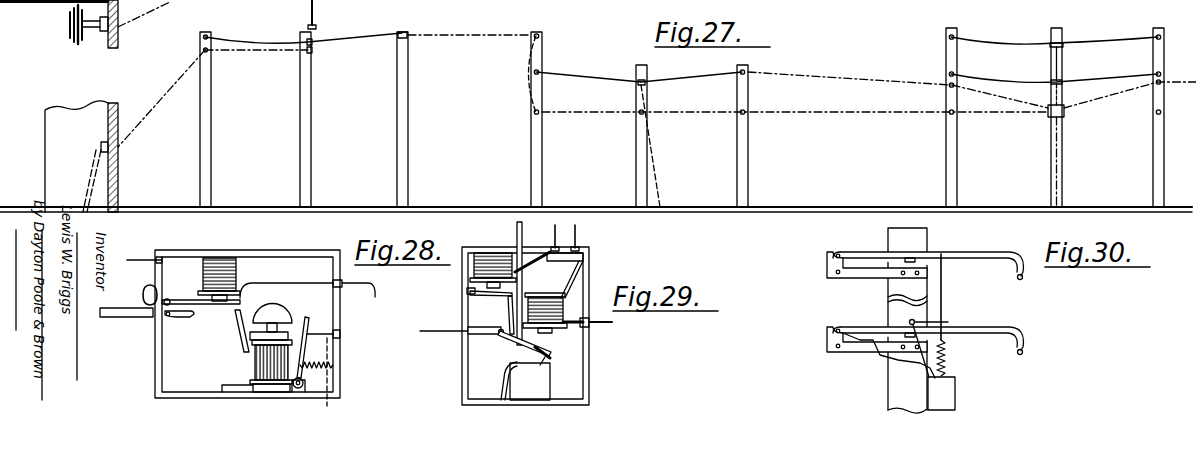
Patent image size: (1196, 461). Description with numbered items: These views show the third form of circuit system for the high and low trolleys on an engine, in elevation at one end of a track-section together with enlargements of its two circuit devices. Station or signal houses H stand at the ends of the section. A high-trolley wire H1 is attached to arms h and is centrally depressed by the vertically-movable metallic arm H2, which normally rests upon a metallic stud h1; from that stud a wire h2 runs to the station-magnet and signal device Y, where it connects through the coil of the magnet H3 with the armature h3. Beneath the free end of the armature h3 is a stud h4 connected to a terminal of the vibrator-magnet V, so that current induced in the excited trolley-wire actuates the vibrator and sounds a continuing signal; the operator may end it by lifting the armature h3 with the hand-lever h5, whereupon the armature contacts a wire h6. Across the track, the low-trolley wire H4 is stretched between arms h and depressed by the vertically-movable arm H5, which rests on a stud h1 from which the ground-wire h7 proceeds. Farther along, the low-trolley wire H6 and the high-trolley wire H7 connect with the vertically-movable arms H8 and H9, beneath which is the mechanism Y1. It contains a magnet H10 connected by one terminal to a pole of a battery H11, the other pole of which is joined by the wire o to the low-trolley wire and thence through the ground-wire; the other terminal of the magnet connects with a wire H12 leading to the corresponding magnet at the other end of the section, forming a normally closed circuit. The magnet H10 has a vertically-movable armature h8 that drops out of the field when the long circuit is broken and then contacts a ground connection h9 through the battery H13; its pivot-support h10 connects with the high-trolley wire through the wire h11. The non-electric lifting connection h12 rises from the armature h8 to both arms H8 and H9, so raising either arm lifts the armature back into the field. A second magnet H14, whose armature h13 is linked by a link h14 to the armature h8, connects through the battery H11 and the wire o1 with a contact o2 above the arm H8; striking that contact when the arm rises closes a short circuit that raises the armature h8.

In FIG. 27, the station or signal house H is at (67, 24).
In FIG. 27, the high-trolley wire H1 is at (303, 32).
In FIG. 27, the vertically-movable metallic arm H2 is at (315, 40).
In FIG. 28, the magnet H3 is at (229, 279).
In FIG. 27, the low-trolley wire H4 is at (588, 67).
In FIG. 27, the vertically-movable arm H5 is at (644, 80).
In FIG. 27, the low-trolley wire H6 is at (1054, 69).
In FIG. 30, the low-trolley wire H6 is at (1022, 353).
In FIG. 27, the high-trolley wire H7 is at (1015, 43).
In FIG. 30, the high-trolley wire H7 is at (1022, 279).
In FIG. 27, the vertically-movable arm H8 is at (1063, 81).
In FIG. 30, the vertically-movable arm H8 is at (925, 329).
In FIG. 27, the vertically-movable arm H9 is at (1064, 42).
In FIG. 30, the vertically-movable arm H9 is at (925, 256).
In FIG. 29, the magnet H10 is at (563, 305).
In FIG. 29, the battery H11 is at (552, 261).
In FIG. 27, the wire H12 is at (1118, 96).
In FIG. 29, the wire H12 is at (612, 326).
In FIG. 29, the battery H13 is at (530, 381).
In FIG. 29, the second magnet H14 is at (494, 253).
In FIG. 27, the arm h is at (209, 40).
In FIG. 27, the metallic stud h1 is at (312, 51).
In FIG. 27, the wire h2 is at (161, 98).
In FIG. 28, the wire h2 is at (144, 251).
In FIG. 28, the armature h3 is at (215, 304).
In FIG. 28, the stud h4 is at (240, 334).
In FIG. 28, the hand-lever h5 is at (128, 301).
In FIG. 28, the wire h6 is at (307, 282).
In FIG. 27, the ground-wire h7 is at (655, 135).
In FIG. 29, the vertically-movable armature h8 is at (550, 356).
In FIG. 29, the ground connection h9 is at (503, 377).
In FIG. 29, the pivot-support h10 is at (513, 344).
In FIG. 27, the wire h11 is at (872, 111).
In FIG. 29, the wire h11 is at (462, 321).
In FIG. 29, the non-electric lifting connection h12 is at (531, 279).
In FIG. 30, the non-electric lifting connection h12 is at (945, 284).
In FIG. 29, the armature h13 is at (490, 296).
In FIG. 29, the link h14 is at (508, 310).
In FIG. 27, the station-magnet and signal device Y is at (81, 124).
In FIG. 28, the station-magnet and signal device Y is at (247, 321).
In FIG. 27, the mechanism Y1 is at (1064, 117).
In FIG. 29, the mechanism Y1 is at (539, 317).
In FIG. 30, the mechanism Y1 is at (952, 389).
In FIG. 28, the vibrator-magnet V is at (295, 345).
In FIG. 27, the wire o is at (898, 86).
In FIG. 29, the wire o is at (556, 234).
In FIG. 30, the wire o is at (867, 338).
In FIG. 29, the wire o1 is at (578, 232).
In FIG. 30, the wire o1 is at (948, 360).
In FIG. 30, the contact o2 is at (946, 322).